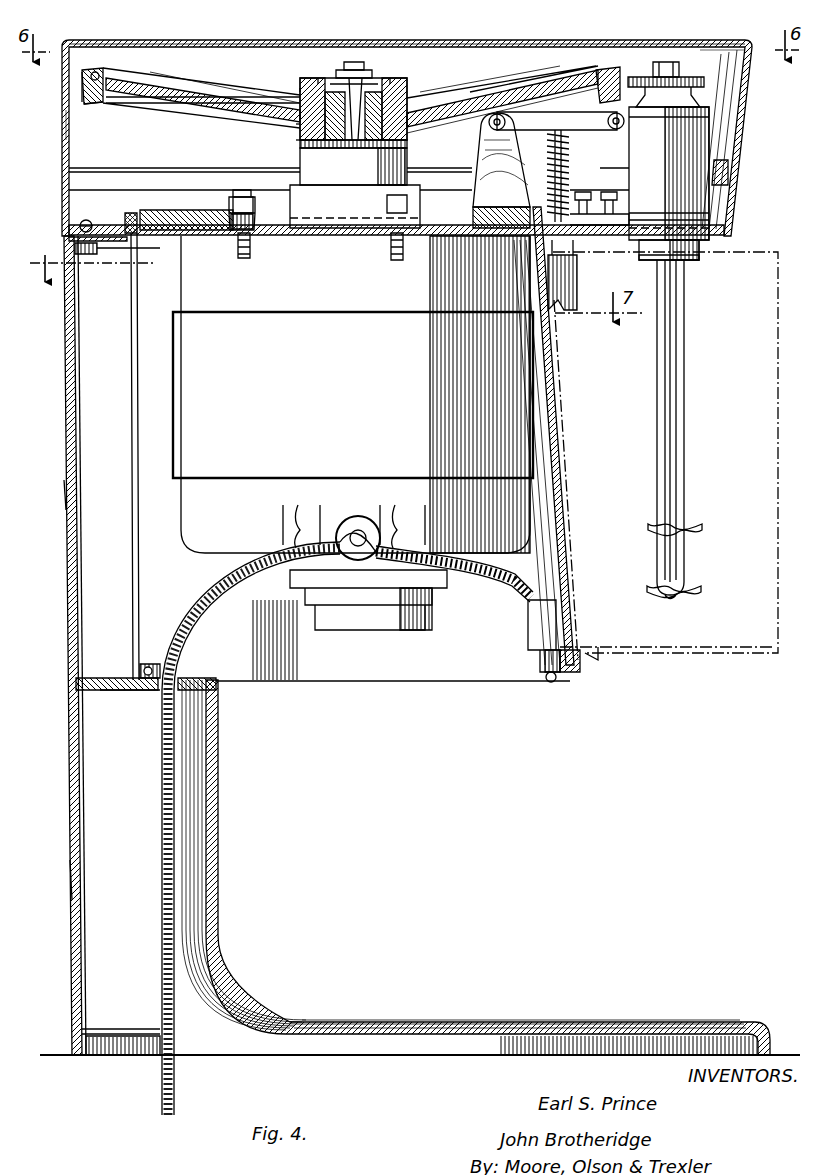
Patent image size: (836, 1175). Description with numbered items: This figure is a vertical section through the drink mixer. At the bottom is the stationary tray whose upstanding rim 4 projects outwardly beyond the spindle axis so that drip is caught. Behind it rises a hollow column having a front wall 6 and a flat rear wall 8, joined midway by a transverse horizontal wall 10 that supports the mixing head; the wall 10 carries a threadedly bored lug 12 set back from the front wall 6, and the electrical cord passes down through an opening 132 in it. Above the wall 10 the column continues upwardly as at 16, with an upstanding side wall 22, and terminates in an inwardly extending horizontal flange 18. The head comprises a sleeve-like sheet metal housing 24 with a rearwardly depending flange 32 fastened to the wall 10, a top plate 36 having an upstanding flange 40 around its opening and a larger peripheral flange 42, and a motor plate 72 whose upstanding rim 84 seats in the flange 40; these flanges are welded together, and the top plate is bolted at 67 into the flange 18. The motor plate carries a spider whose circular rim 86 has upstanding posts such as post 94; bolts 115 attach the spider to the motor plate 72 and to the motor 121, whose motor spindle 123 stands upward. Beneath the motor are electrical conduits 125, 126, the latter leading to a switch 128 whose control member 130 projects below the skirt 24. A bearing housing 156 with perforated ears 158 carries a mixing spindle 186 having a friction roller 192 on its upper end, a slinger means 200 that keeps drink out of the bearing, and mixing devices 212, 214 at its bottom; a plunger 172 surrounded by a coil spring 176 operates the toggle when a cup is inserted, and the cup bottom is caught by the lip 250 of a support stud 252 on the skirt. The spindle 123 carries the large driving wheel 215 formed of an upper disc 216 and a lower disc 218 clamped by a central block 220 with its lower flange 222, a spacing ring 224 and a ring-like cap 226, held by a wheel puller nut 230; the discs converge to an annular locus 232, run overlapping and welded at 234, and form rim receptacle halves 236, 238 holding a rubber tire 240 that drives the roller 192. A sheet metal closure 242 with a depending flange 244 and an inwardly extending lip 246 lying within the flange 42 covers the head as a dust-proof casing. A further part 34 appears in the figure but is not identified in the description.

The upstanding rim 4 is at (760, 1020).
The front wall 6 is at (220, 813).
The rear wall 8 is at (74, 864).
The transverse horizontal wall 10 is at (150, 692).
The threadedly bored lug 12 is at (78, 668).
The upper column portion 16 is at (67, 496).
The horizontal flange 18 is at (103, 258).
The side wall 22 is at (85, 437).
The sleeve-like portion 24 is at (553, 441).
The rearwardly depending flange 32 is at (131, 338).
The fitting 34 is at (150, 663).
The top horizontal plate 36 is at (104, 231).
The upstanding peripheral flange 40 is at (131, 214).
The peripheral upstanding larger flange 42 is at (66, 204).
The bolt 67 is at (88, 220).
The motor plate 72 is at (183, 250).
The upstanding integral rim 84 is at (148, 222).
The circular rim 86 is at (212, 212).
The upstanding post 94 is at (480, 155).
The bolts 115 is at (246, 262).
The motor 121 is at (265, 444).
The motor spindle 123 is at (352, 116).
The electrical conduit 125 is at (318, 503).
The electrical conduit 126 is at (414, 503).
The switch 128 is at (529, 636).
The control member 130 is at (548, 683).
The opening 132 is at (180, 675).
The bearing housing 156 is at (692, 140).
The perforated ears 158 is at (630, 129).
The plunger 172 is at (576, 314).
The coil spring 176 is at (478, 197).
The mixing spindle 186 is at (684, 433).
The friction roller 192 is at (700, 77).
The slinger means 200 is at (697, 258).
The mixing device 212 is at (703, 528).
The mixing device 214 is at (702, 590).
The driving wheel 215 is at (592, 64).
The upper sheet metal disc 216 is at (430, 92).
The lower sheet metal disc 218 is at (470, 103).
The central circular block 220 is at (338, 78).
The outstanding lower flange 222 is at (300, 138).
The spacing ring 224 is at (297, 128).
The ring-like cap 226 is at (300, 88).
The wheel puller nut 230 is at (354, 62).
The annular locus 232 is at (150, 74).
The overlapping portion 234 is at (114, 70).
The rim receptacle half 236 is at (98, 106).
The rim receptacle half 238 is at (96, 70).
The rubber tire 240 is at (80, 85).
The sheet metal closure 242 is at (442, 42).
The depending circular flange 244 is at (66, 128).
The inwardly extending lip 246 is at (78, 170).
The lip 250 is at (596, 661).
The support stud 252 is at (568, 674).